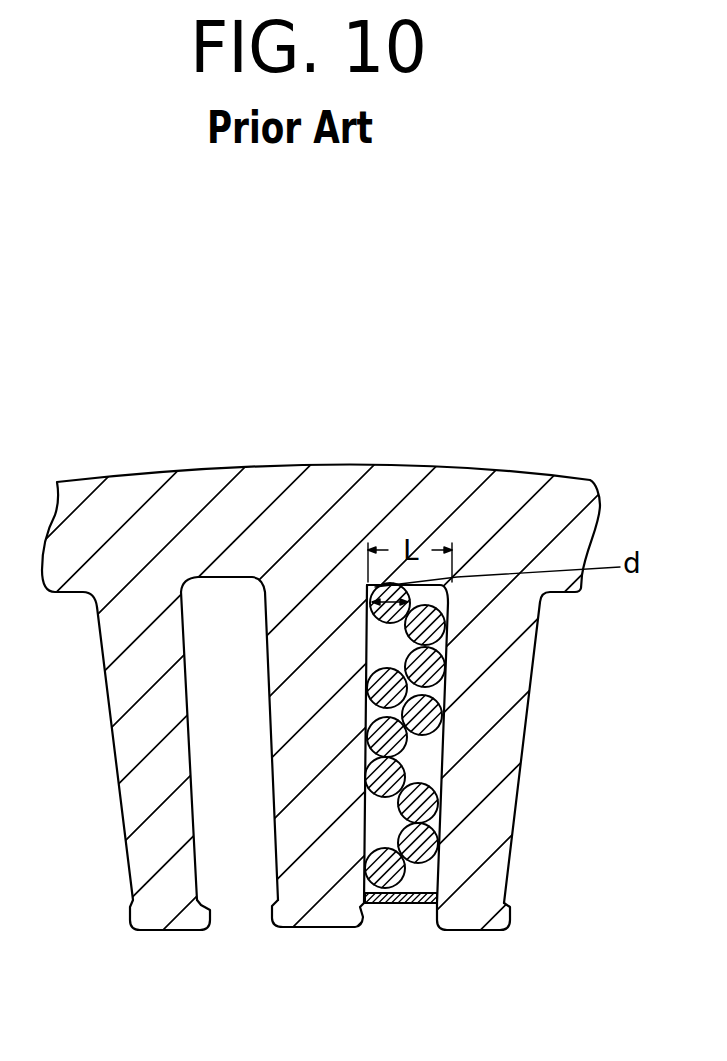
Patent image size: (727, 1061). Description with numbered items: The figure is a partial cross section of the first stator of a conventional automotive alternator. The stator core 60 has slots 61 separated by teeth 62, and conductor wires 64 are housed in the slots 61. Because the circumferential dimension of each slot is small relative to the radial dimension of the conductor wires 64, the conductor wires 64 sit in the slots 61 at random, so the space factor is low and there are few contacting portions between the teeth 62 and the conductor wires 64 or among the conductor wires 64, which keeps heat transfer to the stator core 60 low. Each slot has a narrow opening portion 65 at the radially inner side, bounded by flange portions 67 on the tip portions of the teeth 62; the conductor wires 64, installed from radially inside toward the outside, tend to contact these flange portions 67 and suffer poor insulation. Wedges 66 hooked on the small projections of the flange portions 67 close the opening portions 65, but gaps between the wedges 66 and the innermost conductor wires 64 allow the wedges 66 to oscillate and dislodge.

The stator core 60 is at (513, 495).
The slots 61 is at (233, 840).
The teeth 62 is at (157, 838).
The conductor wires 64 is at (443, 662).
The opening portions 65 is at (255, 917).
The wedges 66 is at (402, 907).
The flange portions 67 is at (457, 920).